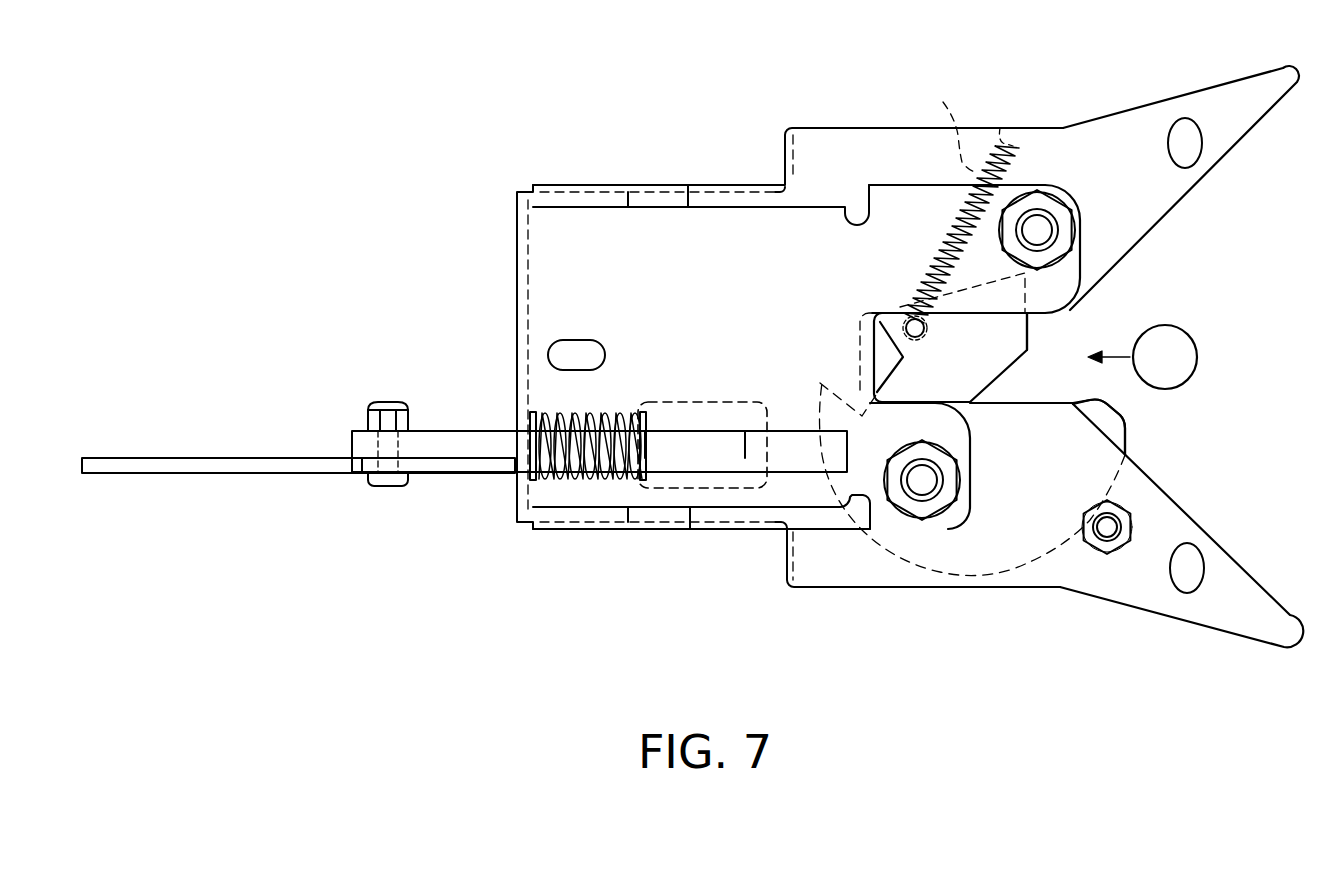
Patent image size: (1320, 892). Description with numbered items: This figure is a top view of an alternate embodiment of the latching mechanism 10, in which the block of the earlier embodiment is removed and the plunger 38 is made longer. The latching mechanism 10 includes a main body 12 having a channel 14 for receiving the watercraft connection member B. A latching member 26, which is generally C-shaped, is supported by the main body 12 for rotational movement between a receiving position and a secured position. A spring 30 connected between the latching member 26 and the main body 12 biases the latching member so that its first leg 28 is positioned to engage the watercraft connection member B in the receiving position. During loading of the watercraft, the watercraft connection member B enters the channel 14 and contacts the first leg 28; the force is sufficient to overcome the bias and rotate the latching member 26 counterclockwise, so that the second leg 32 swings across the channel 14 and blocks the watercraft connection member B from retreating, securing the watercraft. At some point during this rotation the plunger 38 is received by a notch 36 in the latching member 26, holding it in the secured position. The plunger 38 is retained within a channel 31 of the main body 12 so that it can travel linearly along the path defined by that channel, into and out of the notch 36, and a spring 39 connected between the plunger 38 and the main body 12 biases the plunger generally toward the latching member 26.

The latching mechanism 10 is at (592, 112).
The main body 12 is at (1188, 208).
The channel 14 is at (1030, 402).
The latching member 26 is at (960, 578).
The first leg 28 is at (1030, 330).
The spring 30 is at (961, 198).
The channel 31 is at (795, 450).
The second leg 32 is at (1123, 428).
The notch 36 is at (880, 348).
The plunger 38 is at (452, 448).
The spring 39 is at (613, 408).
The watercraft connection member B is at (1186, 383).